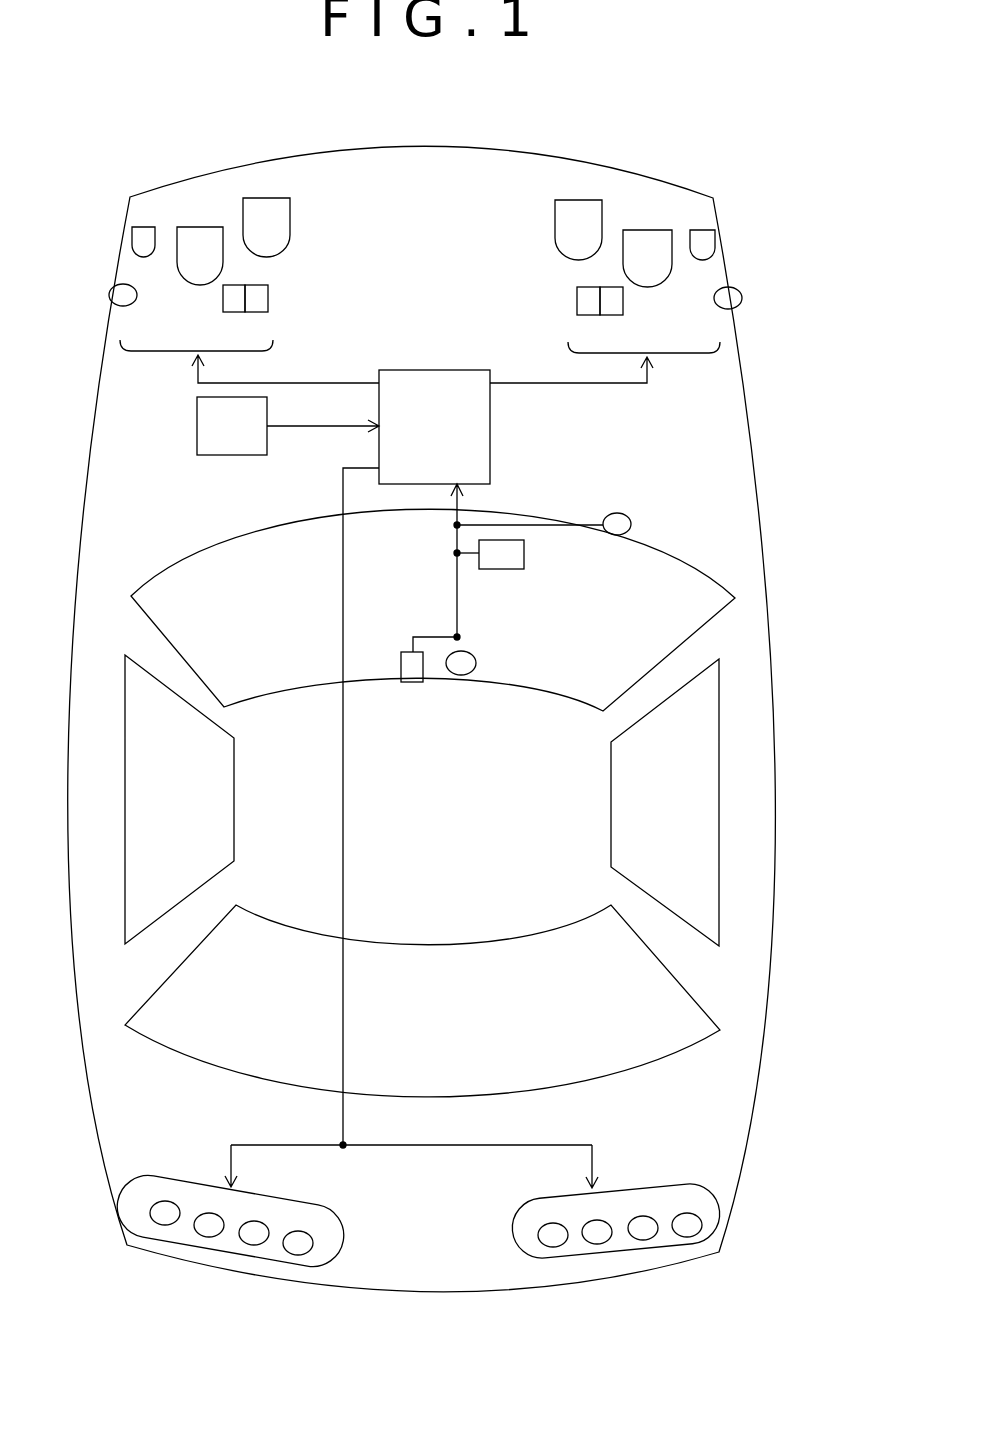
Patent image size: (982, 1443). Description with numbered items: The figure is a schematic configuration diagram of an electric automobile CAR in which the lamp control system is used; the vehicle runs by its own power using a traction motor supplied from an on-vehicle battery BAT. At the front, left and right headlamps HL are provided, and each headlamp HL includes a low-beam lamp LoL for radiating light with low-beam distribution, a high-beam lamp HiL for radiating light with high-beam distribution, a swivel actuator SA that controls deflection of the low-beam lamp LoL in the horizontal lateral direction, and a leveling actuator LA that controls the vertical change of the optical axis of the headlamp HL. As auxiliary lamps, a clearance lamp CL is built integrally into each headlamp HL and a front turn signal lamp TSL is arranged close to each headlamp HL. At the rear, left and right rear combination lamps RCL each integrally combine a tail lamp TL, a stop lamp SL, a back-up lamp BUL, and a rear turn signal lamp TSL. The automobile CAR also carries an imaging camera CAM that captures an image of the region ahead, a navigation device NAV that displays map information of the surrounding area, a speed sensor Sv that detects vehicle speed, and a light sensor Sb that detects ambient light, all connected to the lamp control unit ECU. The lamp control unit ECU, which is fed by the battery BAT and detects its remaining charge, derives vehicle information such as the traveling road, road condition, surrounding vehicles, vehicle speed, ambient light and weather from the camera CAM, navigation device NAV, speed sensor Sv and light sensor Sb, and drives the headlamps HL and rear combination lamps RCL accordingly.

The electric automobile CAR is at (755, 497).
The headlamp HL is at (176, 171).
The low-beam lamp LoL is at (282, 216).
The high-beam lamp HiL is at (200, 245).
The clearance lamp CL is at (138, 241).
The turn signal lamp TSL is at (120, 297).
The leveling actuator LA is at (232, 312).
The swivel actuator SA is at (256, 312).
The lamp control unit ECU is at (422, 771).
The battery BAT is at (288, 426).
The speed sensor Sv is at (628, 522).
The navigation device NAV is at (497, 562).
The imaging camera CAM is at (412, 672).
The light sensor Sb is at (463, 675).
The rear combination lamp RCL is at (175, 1175).
The back-up lamp BUL is at (209, 1230).
The stop lamp SL is at (254, 1238).
The tail lamp TL is at (298, 1248).